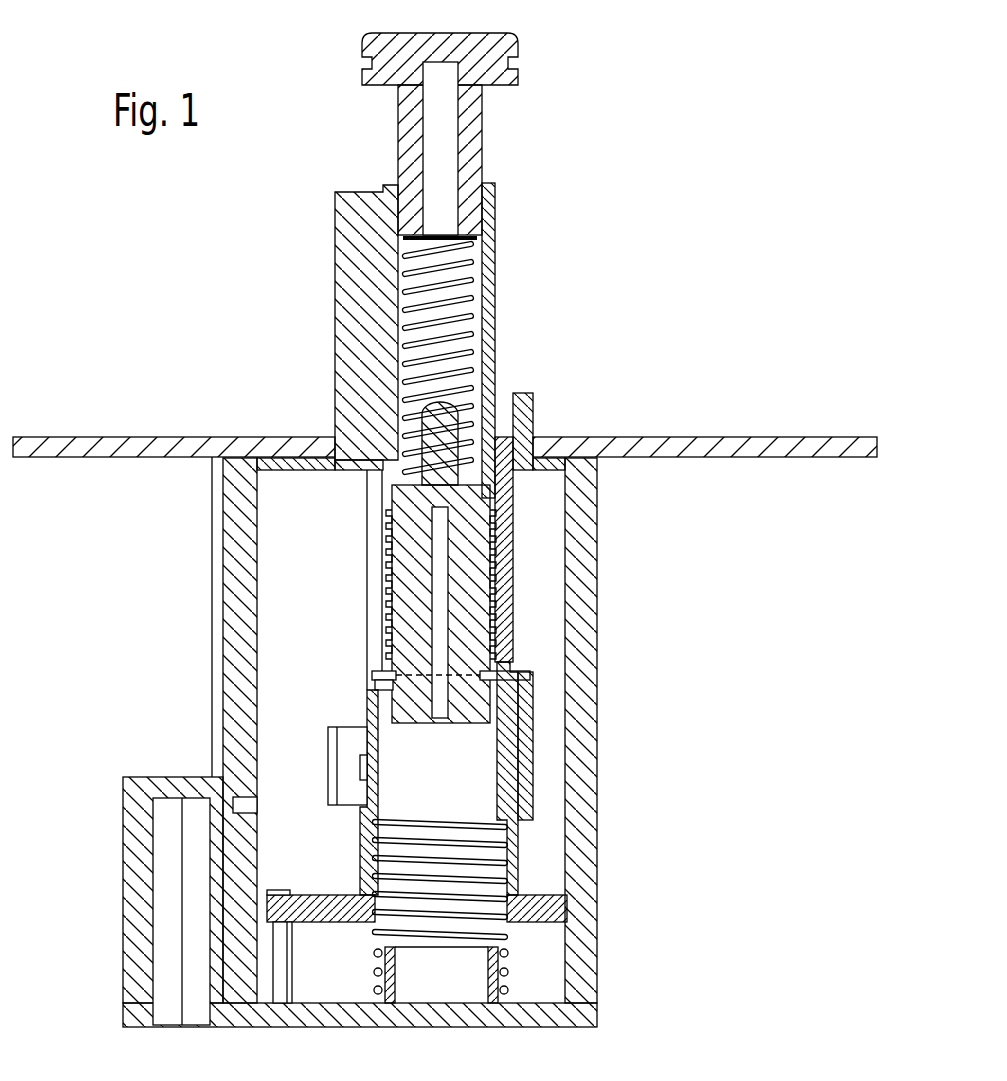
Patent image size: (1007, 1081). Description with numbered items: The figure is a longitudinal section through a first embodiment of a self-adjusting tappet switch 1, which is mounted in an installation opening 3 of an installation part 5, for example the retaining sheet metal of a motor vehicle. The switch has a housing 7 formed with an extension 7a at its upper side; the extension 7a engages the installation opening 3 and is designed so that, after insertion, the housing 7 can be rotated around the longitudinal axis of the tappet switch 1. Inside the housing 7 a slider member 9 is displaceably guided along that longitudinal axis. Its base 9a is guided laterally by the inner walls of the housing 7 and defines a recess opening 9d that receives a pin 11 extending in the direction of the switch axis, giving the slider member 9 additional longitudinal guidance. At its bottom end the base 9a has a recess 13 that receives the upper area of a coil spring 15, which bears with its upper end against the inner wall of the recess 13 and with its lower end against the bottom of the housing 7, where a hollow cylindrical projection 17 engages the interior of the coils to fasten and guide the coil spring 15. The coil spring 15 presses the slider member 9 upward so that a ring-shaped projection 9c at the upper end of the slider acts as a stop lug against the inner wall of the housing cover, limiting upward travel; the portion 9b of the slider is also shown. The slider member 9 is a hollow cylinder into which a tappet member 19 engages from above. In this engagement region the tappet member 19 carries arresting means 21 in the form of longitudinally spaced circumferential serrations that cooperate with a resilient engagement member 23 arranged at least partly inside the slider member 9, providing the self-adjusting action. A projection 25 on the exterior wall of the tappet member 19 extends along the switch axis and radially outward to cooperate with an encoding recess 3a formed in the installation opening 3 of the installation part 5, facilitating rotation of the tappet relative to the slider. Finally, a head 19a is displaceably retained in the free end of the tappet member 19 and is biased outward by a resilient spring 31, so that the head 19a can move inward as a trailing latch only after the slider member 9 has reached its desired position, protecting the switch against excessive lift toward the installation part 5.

The self-adjusting tappet switch 1 is at (598, 305).
The installation opening 3 is at (548, 426).
The encoding recess 3a is at (332, 437).
The installation part 5 is at (770, 437).
The housing 7 is at (598, 548).
The extension 7a is at (535, 396).
The slider member 9 is at (535, 703).
The base 9a is at (568, 905).
The enlarged portion of sleeve 9b is at (538, 782).
The projection 9c is at (517, 480).
The recess opening 9d is at (300, 886).
The pin 11 is at (292, 958).
The recess 13 is at (490, 856).
The coil spring 15 is at (508, 958).
The hollow cylindrical projection 17 is at (488, 974).
The tappet member 19 is at (495, 250).
The head 19a is at (520, 52).
The arresting means 21 is at (395, 568).
The resilient engagement member 23 is at (375, 675).
The projection 25 is at (348, 240).
The resilient spring 31 is at (470, 330).